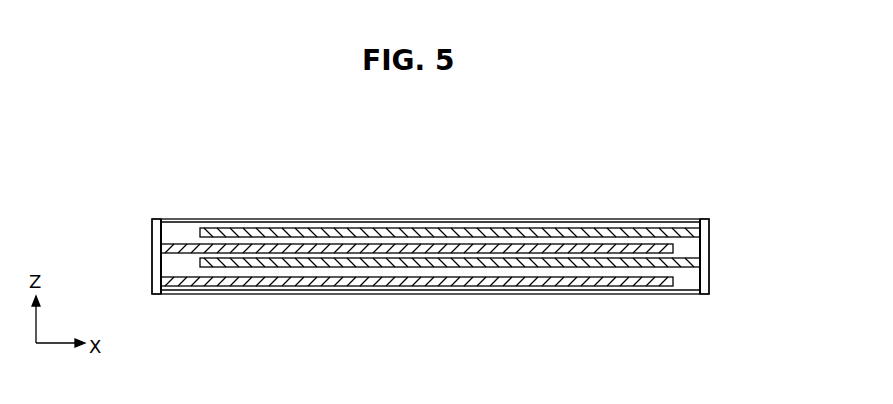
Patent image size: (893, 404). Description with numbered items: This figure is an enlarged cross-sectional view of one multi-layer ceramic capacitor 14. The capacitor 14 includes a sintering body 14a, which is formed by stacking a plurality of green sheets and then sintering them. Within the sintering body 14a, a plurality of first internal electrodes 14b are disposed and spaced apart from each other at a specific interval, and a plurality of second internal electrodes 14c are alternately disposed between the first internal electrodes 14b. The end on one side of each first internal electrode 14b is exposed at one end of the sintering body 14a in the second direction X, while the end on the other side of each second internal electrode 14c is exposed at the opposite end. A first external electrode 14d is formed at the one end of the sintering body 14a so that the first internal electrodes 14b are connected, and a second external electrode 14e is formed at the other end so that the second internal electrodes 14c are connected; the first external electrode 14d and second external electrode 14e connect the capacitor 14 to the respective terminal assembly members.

The multi-layer ceramic capacitor 14 is at (492, 204).
The sintering body 14a is at (192, 229).
The first internal electrode 14b is at (170, 250).
The second internal electrode 14c is at (673, 232).
The first external electrode 14d is at (157, 235).
The second external electrode 14e is at (703, 253).